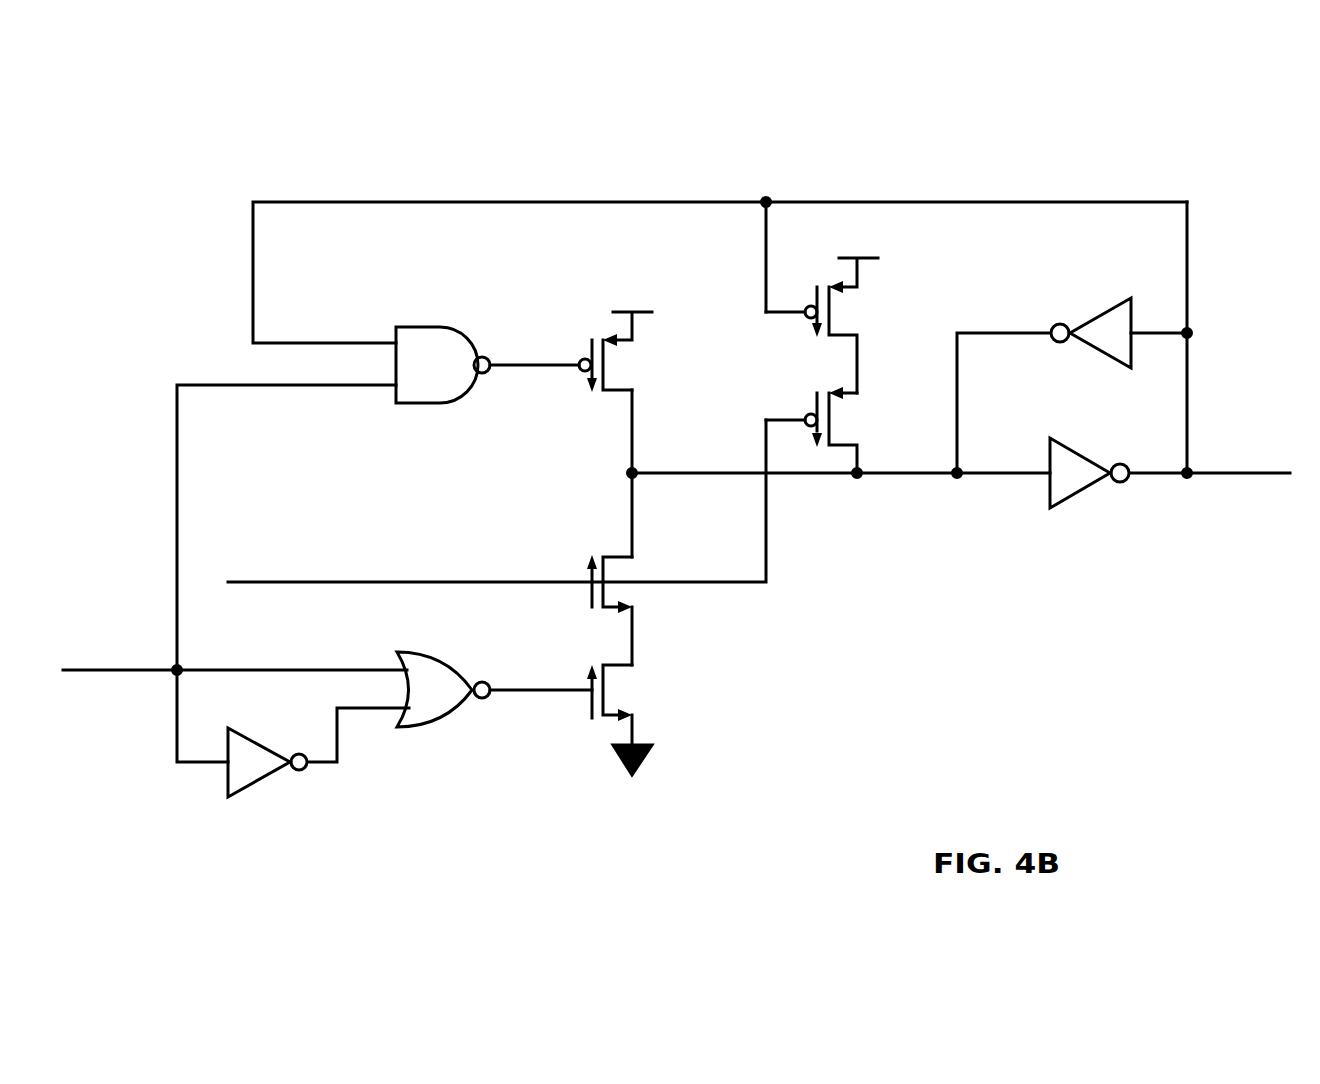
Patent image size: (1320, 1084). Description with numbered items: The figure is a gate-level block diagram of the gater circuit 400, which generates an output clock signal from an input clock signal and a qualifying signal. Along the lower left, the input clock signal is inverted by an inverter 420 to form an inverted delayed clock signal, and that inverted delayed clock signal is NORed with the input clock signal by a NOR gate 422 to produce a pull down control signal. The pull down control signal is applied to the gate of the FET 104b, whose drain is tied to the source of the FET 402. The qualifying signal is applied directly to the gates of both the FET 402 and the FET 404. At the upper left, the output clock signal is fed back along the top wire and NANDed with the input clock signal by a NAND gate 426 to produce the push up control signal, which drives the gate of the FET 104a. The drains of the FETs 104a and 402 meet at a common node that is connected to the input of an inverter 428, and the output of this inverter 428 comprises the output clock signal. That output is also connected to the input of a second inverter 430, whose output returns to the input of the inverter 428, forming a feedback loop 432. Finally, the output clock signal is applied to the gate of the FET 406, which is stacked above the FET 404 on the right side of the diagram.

The circuit 400 is at (186, 283).
The NAND gate 426 is at (438, 327).
The FET 104a is at (630, 362).
The FET 402 is at (630, 572).
The FET 104b is at (630, 692).
The FET 406 is at (858, 313).
The FET 404 is at (857, 418).
The second inverter 430 is at (1097, 313).
The inverter 428 is at (1085, 490).
The feedback loop 432 is at (1201, 363).
The inverter 420 is at (265, 780).
The NOR gate 422 is at (440, 652).